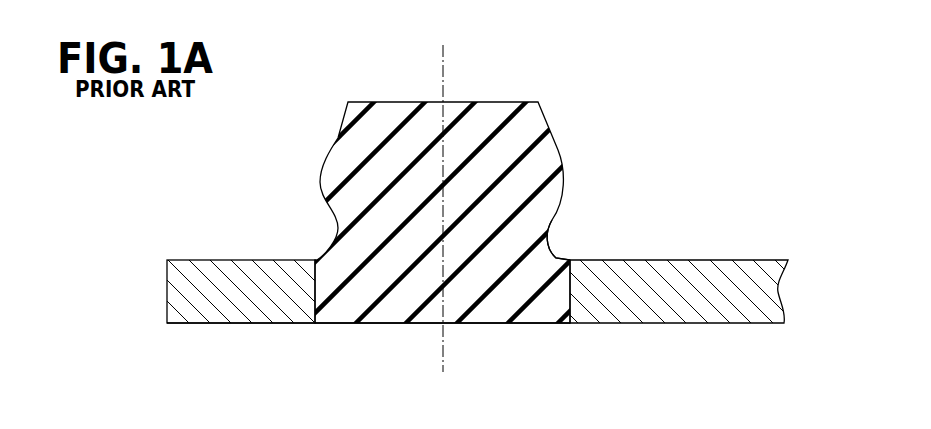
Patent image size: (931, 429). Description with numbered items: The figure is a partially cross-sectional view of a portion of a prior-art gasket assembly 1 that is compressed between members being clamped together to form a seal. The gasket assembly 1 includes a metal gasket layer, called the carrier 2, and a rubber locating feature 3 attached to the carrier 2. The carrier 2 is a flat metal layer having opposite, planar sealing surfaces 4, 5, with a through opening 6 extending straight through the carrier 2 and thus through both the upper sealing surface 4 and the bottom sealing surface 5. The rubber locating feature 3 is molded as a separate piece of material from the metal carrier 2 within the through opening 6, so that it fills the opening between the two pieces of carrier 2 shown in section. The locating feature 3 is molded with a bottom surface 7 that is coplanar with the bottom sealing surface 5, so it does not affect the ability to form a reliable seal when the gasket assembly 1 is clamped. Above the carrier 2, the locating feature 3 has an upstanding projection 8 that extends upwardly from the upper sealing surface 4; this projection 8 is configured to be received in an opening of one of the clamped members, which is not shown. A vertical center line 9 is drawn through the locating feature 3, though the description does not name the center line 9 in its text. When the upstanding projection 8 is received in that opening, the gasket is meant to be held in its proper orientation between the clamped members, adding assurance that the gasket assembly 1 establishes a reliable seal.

The gasket assembly 1 is at (672, 132).
The carrier 2 is at (712, 273).
The rubber locating feature 3 is at (543, 148).
The upper sealing surface 4 is at (191, 260).
The bottom sealing surface 5 is at (228, 324).
The through opening 6 is at (552, 272).
The bottom surface 7 is at (490, 324).
The upstanding projection 8 is at (293, 102).
The weld center line 9 is at (443, 62).